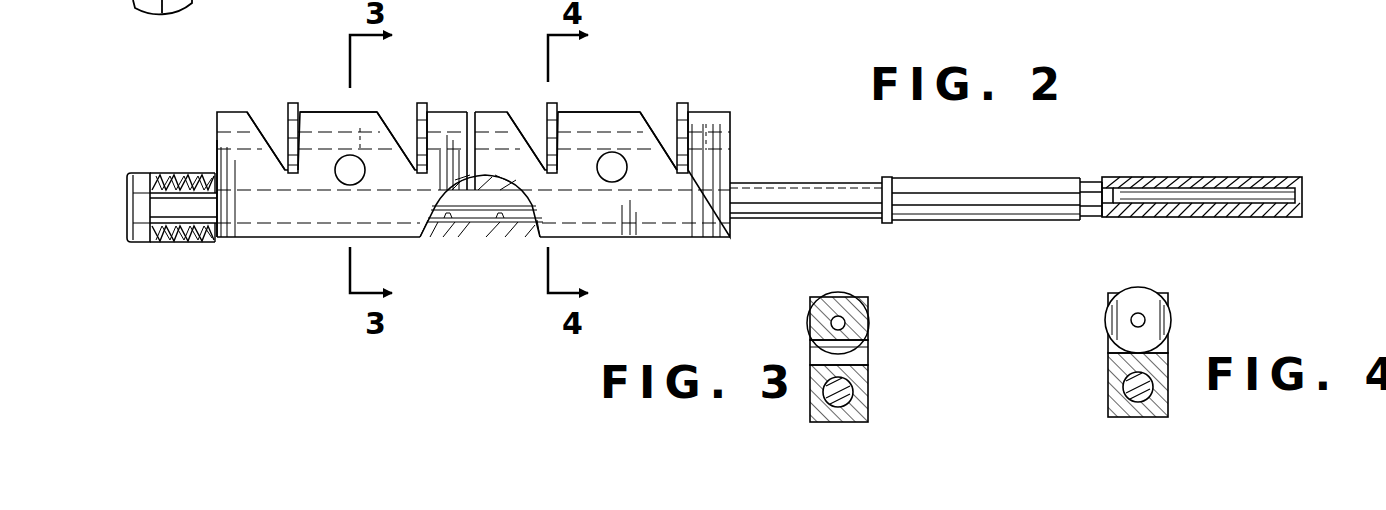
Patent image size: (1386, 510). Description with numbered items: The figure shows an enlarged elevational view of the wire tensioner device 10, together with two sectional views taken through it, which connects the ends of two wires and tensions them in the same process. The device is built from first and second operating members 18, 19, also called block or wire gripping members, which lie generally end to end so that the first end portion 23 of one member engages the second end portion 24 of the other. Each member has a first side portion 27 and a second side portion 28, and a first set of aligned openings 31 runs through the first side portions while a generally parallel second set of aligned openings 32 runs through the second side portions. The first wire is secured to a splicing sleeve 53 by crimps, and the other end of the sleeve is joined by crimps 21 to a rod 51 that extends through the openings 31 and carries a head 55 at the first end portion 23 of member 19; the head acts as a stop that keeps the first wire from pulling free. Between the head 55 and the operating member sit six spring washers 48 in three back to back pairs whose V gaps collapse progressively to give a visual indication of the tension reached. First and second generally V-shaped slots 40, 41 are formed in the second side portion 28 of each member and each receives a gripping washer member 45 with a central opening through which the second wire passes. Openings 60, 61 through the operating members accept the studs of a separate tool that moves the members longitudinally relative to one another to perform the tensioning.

In FIG. 2, the wire tensioner device 10 is at (124, 137).
In FIG. 2, the first operating member 18 is at (640, 237).
In FIG. 2, the second operating member 19 is at (240, 240).
In FIG. 2, the crimps 21 is at (956, 195).
In FIG. 2, the first end portion 23 is at (215, 118).
In FIG. 2, the second end portion 24 is at (473, 125).
In FIG. 2, the first side portion 27 is at (286, 240).
In FIG. 2, the second side portion 28 is at (306, 112).
In FIG. 2, the first set of aligned openings 31 is at (429, 230).
In FIG. 2, the second set of aligned openings 32 is at (360, 130).
In FIG. 2, the first V-shaped slot 40 is at (268, 125).
In FIG. 2, the second V-shaped slot 41 is at (402, 130).
In FIG. 2, the gripping washer member 45 is at (291, 106).
In FIG. 3, the gripping washer member 45 is at (845, 297).
In FIG. 4, the gripping washer member 45 is at (1140, 290).
In FIG. 2, the spring washers 48 is at (205, 242).
In FIG. 2, the rod 51 is at (760, 185).
In FIG. 3, the rod 51 is at (850, 392).
In FIG. 4, the rod 51 is at (1130, 385).
In FIG. 2, the splicing sleeve 53 is at (1088, 190).
In FIG. 2, the head 55 is at (135, 193).
In FIG. 2, the opening 60 is at (613, 182).
In FIG. 2, the opening 61 is at (348, 172).
In FIG. 3, the opening 61 is at (855, 357).